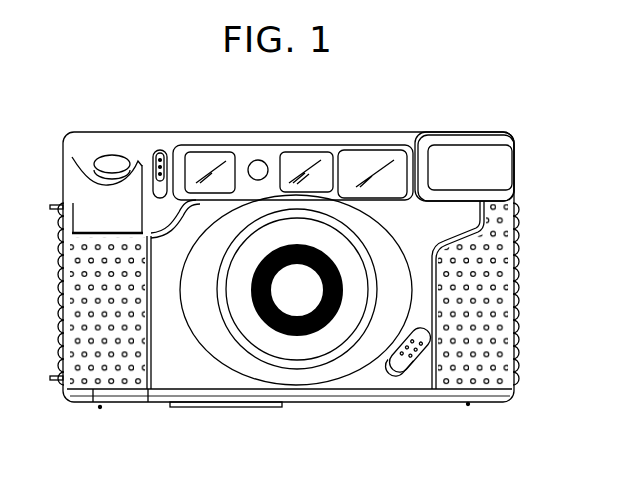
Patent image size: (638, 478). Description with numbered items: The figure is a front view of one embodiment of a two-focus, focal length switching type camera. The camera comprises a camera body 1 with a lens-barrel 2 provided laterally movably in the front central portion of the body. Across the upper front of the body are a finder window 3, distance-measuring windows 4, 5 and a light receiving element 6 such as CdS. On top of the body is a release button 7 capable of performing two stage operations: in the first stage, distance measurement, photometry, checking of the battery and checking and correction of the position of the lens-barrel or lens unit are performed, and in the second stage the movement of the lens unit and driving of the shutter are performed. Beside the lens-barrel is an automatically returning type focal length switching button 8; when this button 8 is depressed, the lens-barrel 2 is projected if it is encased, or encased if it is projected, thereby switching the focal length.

The camera body 1 is at (497, 248).
The lens-barrel 2 is at (303, 355).
The finder window 3 is at (368, 158).
The distance-measuring window 4 is at (305, 155).
The distance-measuring window 5 is at (208, 162).
The light receiving element 6 is at (258, 160).
The release button 7 is at (110, 157).
The focal length switching button 8 is at (407, 368).